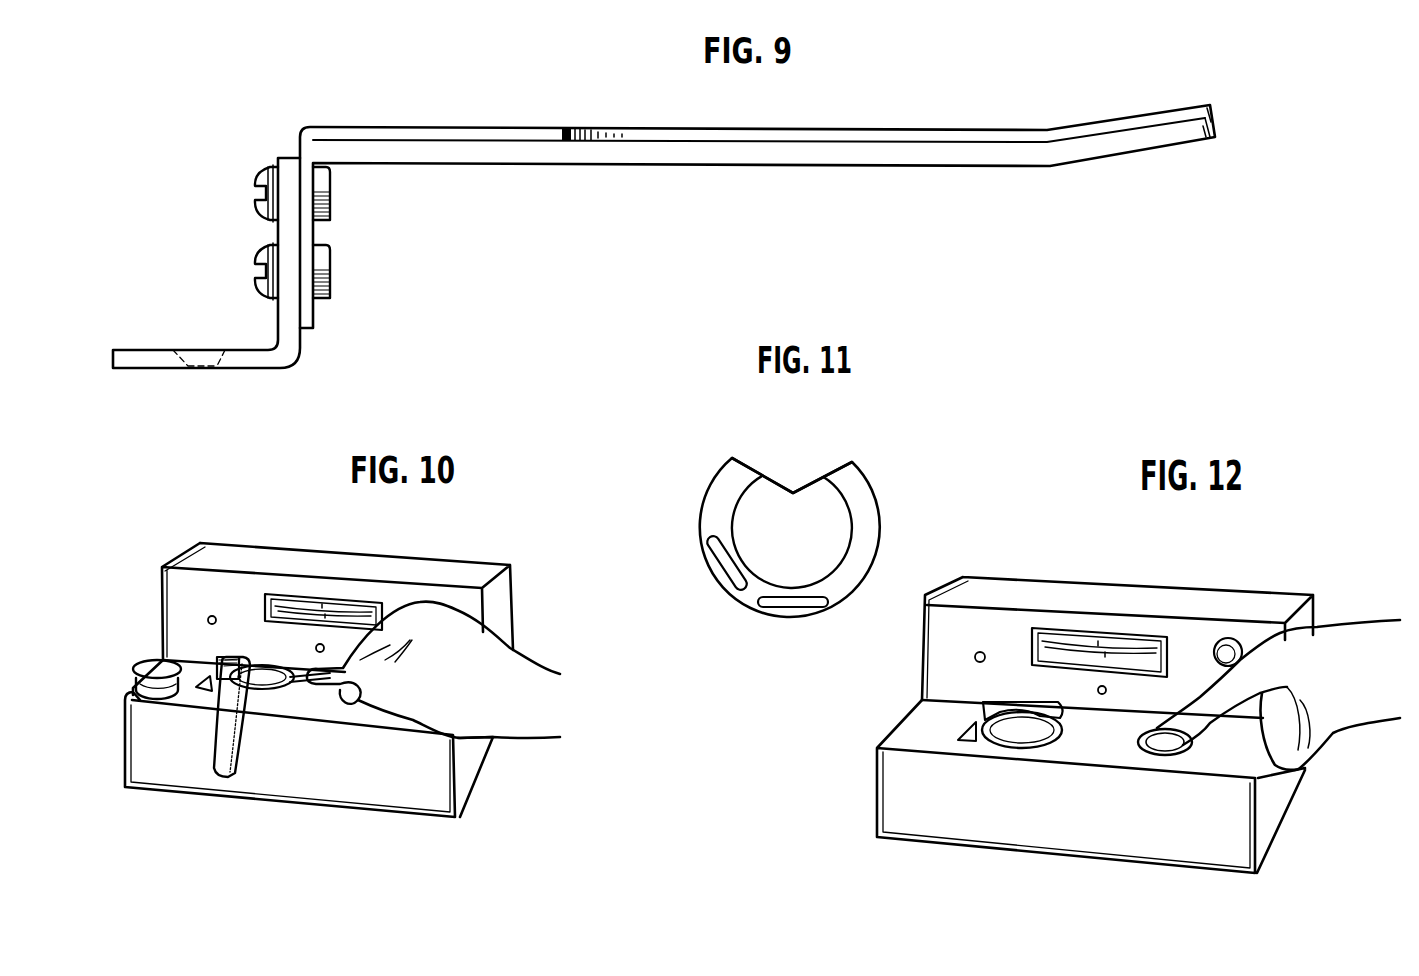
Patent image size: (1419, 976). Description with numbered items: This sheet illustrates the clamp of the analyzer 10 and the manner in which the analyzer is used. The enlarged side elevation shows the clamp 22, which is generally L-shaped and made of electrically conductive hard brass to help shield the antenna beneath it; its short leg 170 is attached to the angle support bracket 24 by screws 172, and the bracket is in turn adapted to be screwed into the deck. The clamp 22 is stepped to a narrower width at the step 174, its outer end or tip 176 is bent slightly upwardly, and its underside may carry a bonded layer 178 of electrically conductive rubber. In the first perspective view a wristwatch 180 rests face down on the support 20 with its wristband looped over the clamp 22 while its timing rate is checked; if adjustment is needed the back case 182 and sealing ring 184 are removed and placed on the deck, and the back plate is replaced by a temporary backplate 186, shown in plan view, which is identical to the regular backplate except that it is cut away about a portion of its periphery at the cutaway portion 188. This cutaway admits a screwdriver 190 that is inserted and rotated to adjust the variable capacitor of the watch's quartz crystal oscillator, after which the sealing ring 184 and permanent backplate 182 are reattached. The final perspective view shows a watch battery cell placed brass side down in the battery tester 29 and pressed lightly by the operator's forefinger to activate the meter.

In FIG. 10, the analyzer 10 is at (146, 575).
In FIG. 12, the analyzer 10 is at (1245, 583).
In FIG. 10, the support 20 is at (250, 693).
In FIG. 9, the clamp 22 is at (492, 122).
In FIG. 10, the clamp 22 is at (229, 656).
In FIG. 9, the support bracket 24 is at (152, 358).
In FIG. 12, the battery tester 29 is at (1153, 756).
In FIG. 9, the short leg 170 is at (299, 150).
In FIG. 9, the screws 172 is at (262, 266).
In FIG. 9, the step 174 is at (568, 128).
In FIG. 9, the tip 176 is at (1118, 120).
In FIG. 9, the layer of electrically conductive rubber 178 is at (865, 152).
In FIG. 10, the wristwatch 180 is at (263, 690).
In FIG. 10, the back case 182 is at (145, 688).
In FIG. 10, the sealing ring 184 is at (158, 665).
In FIG. 11, the temporary backplate 186 is at (750, 505).
In FIG. 11, the cutaway portion 188 is at (803, 488).
In FIG. 10, the screwdriver 190 is at (322, 677).